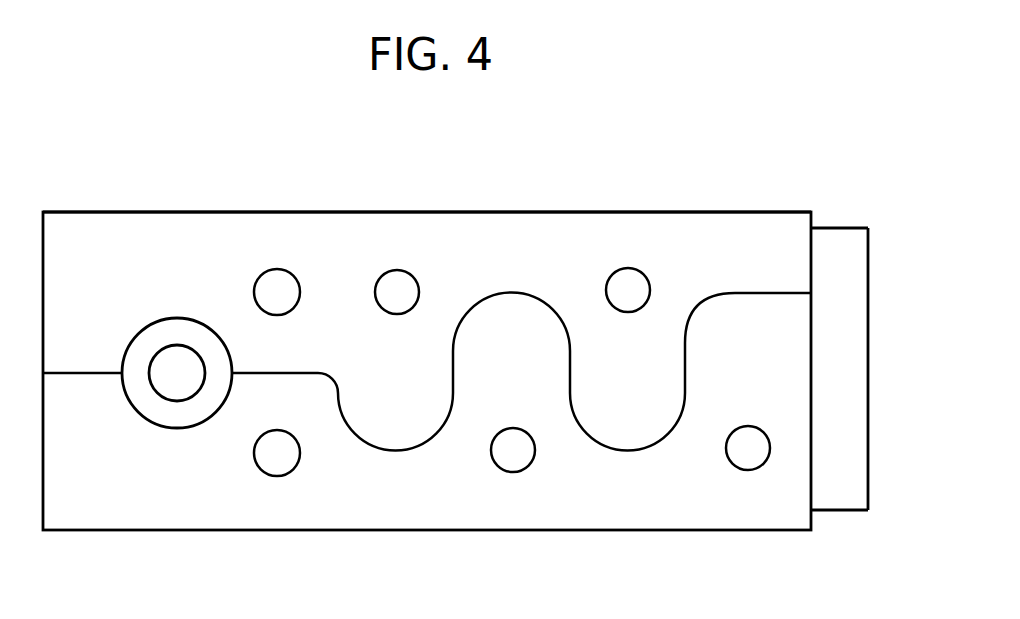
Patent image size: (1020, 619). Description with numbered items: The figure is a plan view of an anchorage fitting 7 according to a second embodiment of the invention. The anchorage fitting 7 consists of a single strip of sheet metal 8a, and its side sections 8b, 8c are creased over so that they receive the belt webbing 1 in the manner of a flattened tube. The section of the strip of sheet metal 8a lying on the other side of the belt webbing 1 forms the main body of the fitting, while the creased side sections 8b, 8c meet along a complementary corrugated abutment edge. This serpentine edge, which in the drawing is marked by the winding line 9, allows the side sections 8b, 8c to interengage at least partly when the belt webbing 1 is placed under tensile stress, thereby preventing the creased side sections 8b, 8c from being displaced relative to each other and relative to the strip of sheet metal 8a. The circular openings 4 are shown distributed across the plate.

The belt webbing 1 is at (847, 342).
The mounting holes 4 is at (278, 460).
The anchorage fitting 7 is at (581, 198).
The strip of sheet metal 8a is at (252, 241).
The side section 8b is at (800, 255).
The side section 8c is at (790, 423).
The serpentine channel groove 9 is at (632, 450).